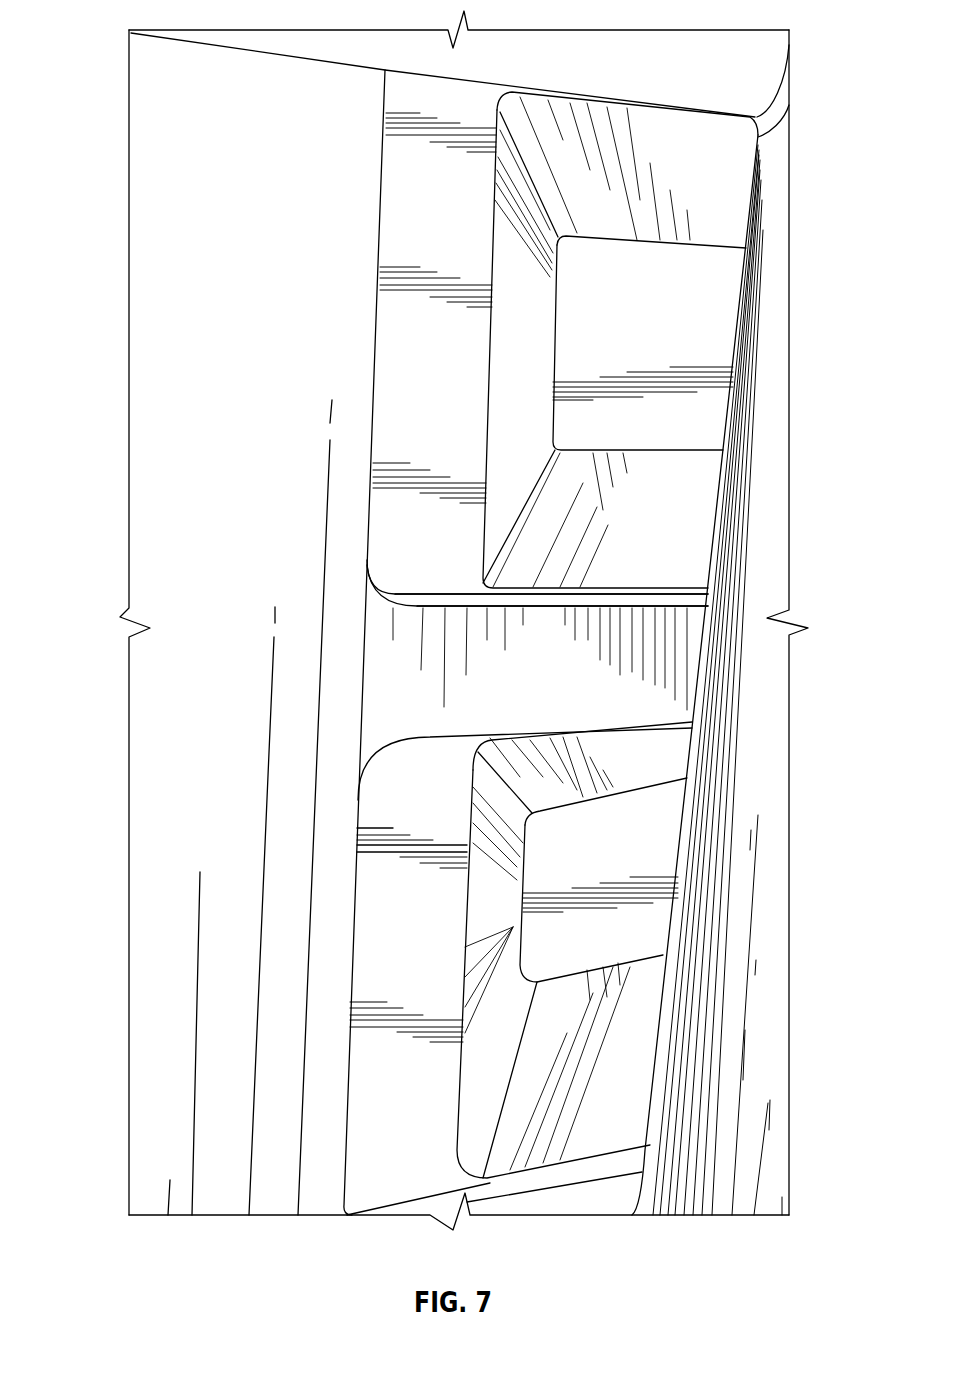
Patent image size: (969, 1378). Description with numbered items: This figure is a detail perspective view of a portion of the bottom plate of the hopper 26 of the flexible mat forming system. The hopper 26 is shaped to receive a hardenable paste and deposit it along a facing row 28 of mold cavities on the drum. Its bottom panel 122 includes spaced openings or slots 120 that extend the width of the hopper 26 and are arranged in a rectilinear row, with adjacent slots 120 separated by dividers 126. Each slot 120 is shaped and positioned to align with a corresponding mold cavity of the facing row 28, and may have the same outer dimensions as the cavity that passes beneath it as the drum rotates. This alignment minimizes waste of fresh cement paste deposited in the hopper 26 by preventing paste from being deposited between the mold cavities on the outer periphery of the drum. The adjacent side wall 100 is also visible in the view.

The hopper 26 is at (131, 458).
The facing row 28 is at (410, 343).
The side wall 100 is at (778, 475).
The slots 120 is at (348, 1043).
The bottom panel 122 is at (303, 1097).
The dividers 126 is at (636, 607).